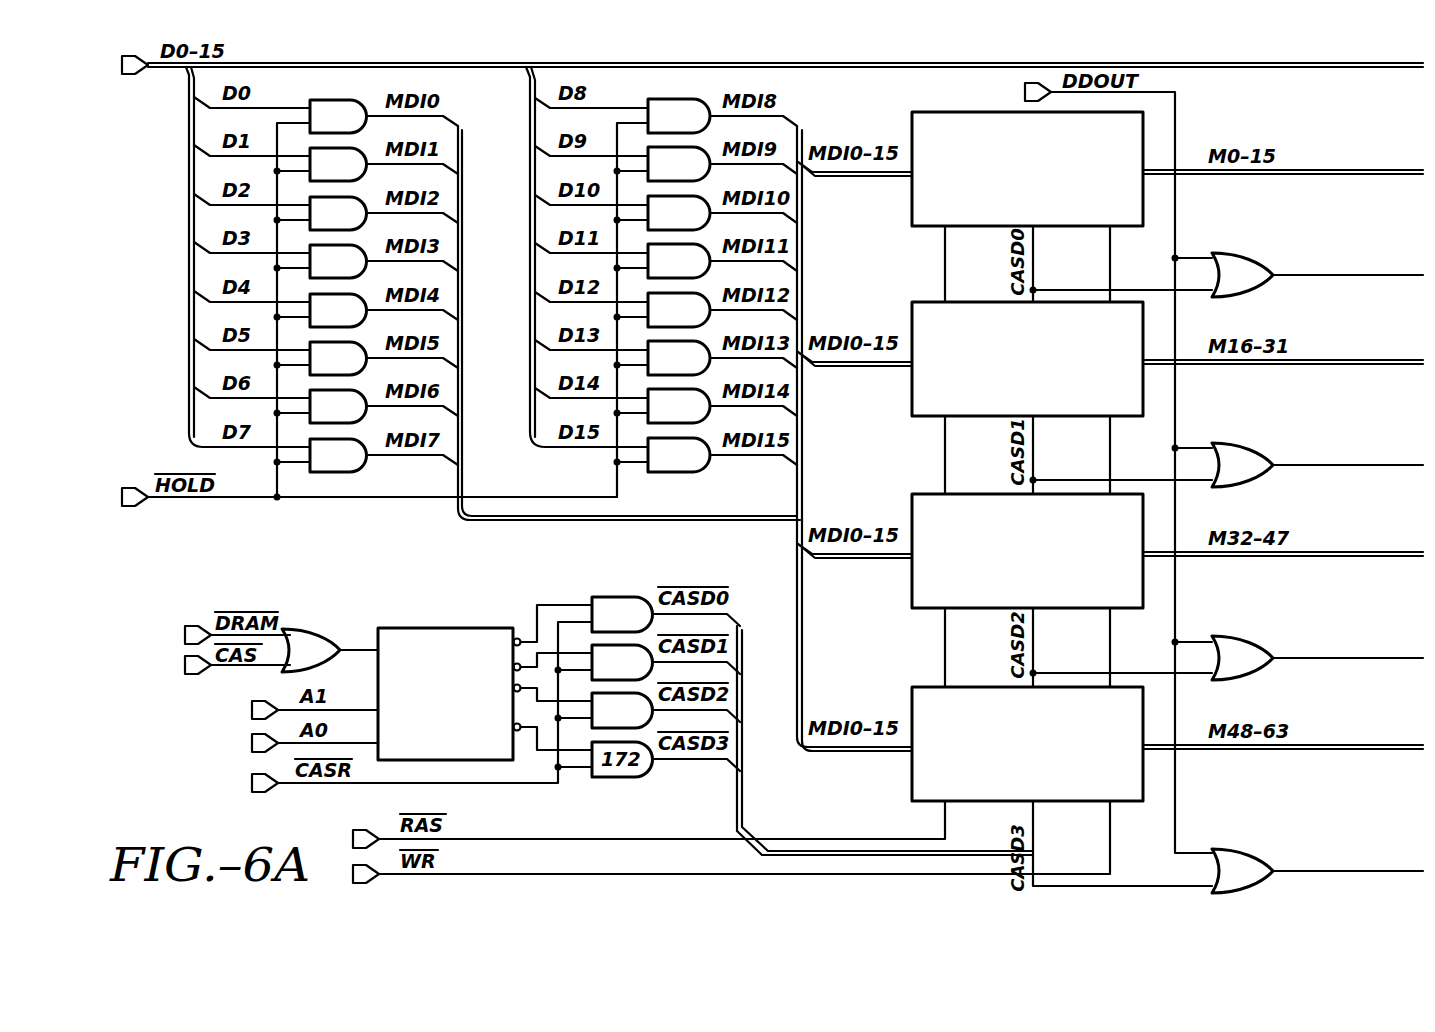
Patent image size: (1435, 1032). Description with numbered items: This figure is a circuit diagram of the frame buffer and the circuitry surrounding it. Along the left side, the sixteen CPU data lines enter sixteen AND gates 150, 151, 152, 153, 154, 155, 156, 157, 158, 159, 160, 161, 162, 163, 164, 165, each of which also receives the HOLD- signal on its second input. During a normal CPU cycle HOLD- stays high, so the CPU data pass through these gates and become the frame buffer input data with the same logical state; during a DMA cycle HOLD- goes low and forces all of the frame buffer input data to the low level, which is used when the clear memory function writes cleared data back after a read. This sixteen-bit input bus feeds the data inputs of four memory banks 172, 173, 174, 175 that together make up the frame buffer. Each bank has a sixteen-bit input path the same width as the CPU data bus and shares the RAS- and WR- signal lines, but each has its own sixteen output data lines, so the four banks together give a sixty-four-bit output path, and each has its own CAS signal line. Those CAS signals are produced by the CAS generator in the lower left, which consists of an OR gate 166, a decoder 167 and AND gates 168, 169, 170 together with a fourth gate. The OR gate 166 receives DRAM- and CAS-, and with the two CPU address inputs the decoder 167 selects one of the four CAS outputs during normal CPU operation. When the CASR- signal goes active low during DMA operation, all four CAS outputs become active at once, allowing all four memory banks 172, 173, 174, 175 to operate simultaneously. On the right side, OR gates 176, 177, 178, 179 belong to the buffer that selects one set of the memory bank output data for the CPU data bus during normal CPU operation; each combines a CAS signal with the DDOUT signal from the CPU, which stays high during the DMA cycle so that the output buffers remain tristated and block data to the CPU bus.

The AND gate 150 is at (338, 116).
The AND gate 151 is at (338, 164).
The AND gate 152 is at (338, 213).
The AND gate 153 is at (338, 261).
The AND gate 154 is at (338, 310).
The AND gate 155 is at (338, 358).
The AND gate 156 is at (338, 406).
The AND gate 157 is at (338, 455).
The AND gate 158 is at (679, 116).
The AND gate 159 is at (679, 164).
The AND gate 160 is at (679, 213).
The AND gate 161 is at (679, 261).
The AND gate 162 is at (679, 310).
The AND gate 163 is at (679, 358).
The AND gate 164 is at (679, 406).
The AND gate 165 is at (679, 455).
The OR gate 166 is at (311, 650).
The decoder 167 is at (455, 628).
The AND gate 168 is at (622, 614).
The AND gate 169 is at (622, 662).
The AND gate 170 is at (622, 710).
The memory bank 172 is at (936, 112).
The memory bank 173 is at (936, 302).
The memory bank 174 is at (936, 494).
The memory bank 175 is at (936, 687).
The OR gate 176 is at (1242, 275).
The OR gate 177 is at (1242, 465).
The OR gate 178 is at (1242, 658).
The OR gate 179 is at (1242, 871).